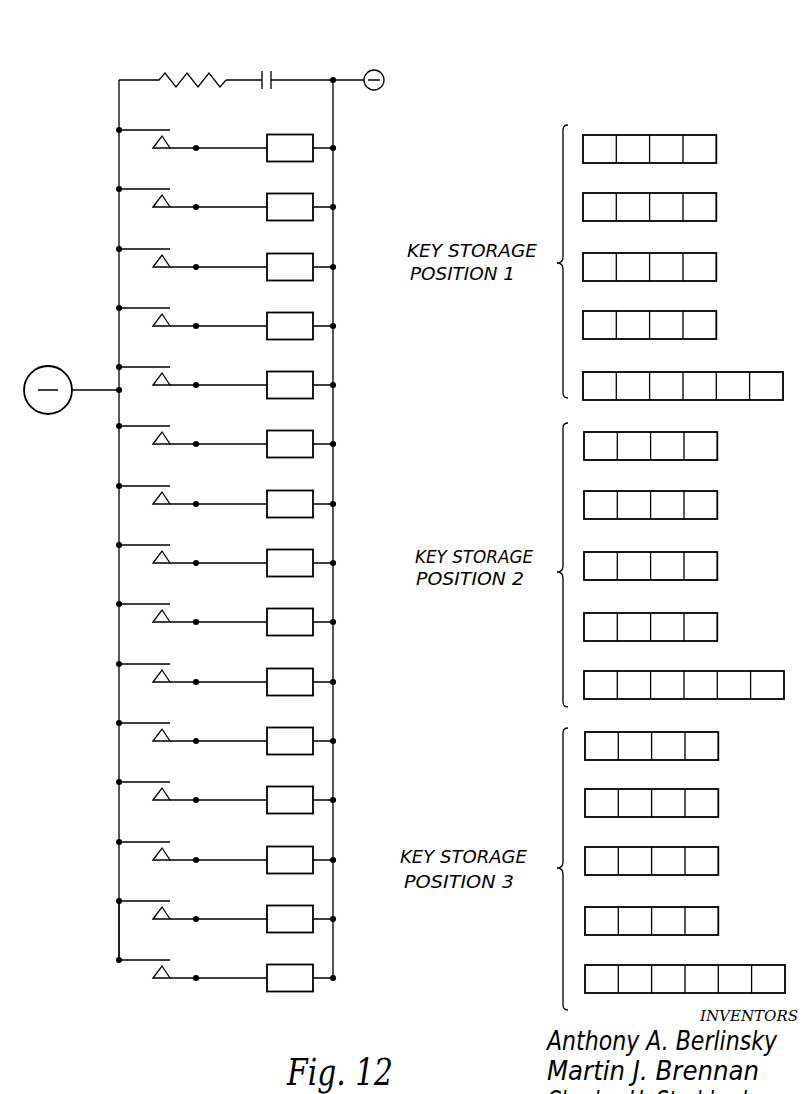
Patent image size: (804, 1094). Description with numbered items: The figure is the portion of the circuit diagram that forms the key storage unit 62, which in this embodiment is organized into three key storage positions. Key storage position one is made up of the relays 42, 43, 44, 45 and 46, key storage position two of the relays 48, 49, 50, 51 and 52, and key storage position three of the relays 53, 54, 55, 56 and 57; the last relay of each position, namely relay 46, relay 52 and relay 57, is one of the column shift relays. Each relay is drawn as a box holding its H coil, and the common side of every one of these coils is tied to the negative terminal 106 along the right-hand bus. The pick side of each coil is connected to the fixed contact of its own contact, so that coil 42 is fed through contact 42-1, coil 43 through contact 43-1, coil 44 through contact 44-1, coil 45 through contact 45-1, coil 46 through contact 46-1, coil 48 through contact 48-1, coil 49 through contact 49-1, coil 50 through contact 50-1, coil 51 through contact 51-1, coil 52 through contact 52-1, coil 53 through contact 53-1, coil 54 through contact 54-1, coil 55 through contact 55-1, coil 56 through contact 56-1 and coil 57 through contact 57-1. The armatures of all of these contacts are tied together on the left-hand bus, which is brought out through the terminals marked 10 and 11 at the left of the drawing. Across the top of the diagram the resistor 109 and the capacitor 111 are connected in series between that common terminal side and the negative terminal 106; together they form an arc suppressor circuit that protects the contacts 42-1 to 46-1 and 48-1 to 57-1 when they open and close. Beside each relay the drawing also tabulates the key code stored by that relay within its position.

The key storage unit 62 is at (358, 28).
The resistor 109 is at (208, 92).
The capacitor 111 is at (266, 92).
The negative terminal 106 is at (383, 86).
The input from figure 5/6A 10 is at (68, 381).
The bus line 11 is at (74, 923).
The contact 42-1 is at (175, 132).
The contact 43-1 is at (175, 191).
The contact 44-1 is at (175, 251).
The contact 45-1 is at (175, 310).
The contact 46-1 is at (175, 369).
The contact 48-1 is at (175, 428).
The contact 49-1 is at (175, 488).
The contact 50-1 is at (175, 547).
The contact 51-1 is at (175, 606).
The contact 52-1 is at (175, 666).
The contact 53-1 is at (175, 725).
The contact 54-1 is at (175, 784).
The contact 55-1 is at (175, 844).
The contact 56-1 is at (175, 903).
The contact 57-1 is at (175, 962).
The key storage relay 42 is at (443, 143).
The key storage relay 43 is at (443, 202).
The key storage relay 44 is at (443, 262).
The key storage relay 45 is at (443, 320).
The column shift relay 46 is at (476, 380).
The key storage relay 48 is at (443, 440).
The key storage relay 49 is at (443, 499).
The key storage relay 50 is at (443, 559).
The key storage relay 51 is at (443, 619).
The column shift relay 52 is at (477, 678).
The key storage relay 53 is at (444, 738).
The key storage relay 54 is at (444, 796).
The key storage relay 55 is at (444, 855).
The key storage relay 56 is at (444, 915).
The column shift relay 57 is at (477, 973).